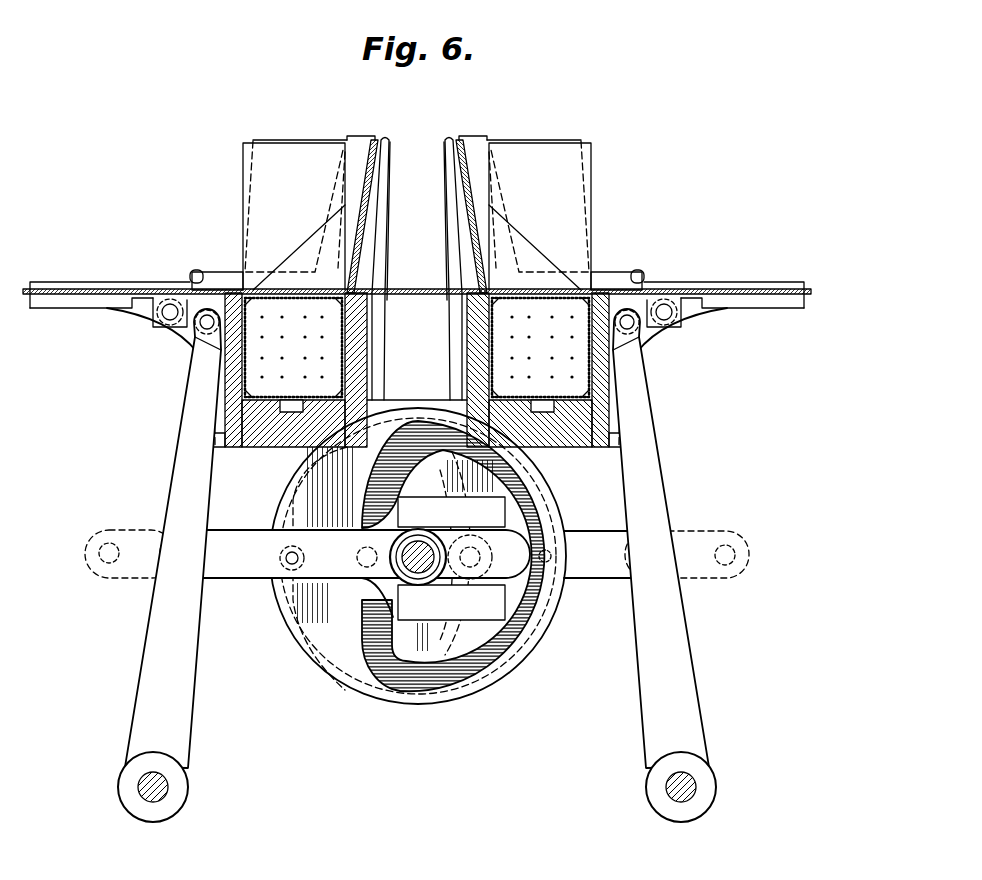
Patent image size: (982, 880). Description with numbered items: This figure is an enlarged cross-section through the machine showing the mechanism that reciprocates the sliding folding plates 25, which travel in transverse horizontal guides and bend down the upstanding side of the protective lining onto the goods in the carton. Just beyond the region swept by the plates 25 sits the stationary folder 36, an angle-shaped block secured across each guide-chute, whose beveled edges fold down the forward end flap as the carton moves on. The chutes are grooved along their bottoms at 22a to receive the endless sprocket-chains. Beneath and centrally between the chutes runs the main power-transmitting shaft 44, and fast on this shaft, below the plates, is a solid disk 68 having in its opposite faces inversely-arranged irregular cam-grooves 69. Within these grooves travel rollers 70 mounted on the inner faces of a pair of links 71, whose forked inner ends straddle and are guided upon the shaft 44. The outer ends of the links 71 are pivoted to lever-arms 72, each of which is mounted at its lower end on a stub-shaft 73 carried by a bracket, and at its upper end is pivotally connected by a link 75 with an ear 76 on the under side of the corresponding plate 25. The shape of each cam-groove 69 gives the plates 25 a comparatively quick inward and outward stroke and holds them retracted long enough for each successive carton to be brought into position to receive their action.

The folding plate 25 is at (123, 290).
The stationary folder 36 is at (236, 272).
The link 75 is at (200, 305).
The ear 76 is at (175, 328).
The groove 22a is at (287, 413).
The solid disk 68 is at (535, 637).
The cam-groove 69 is at (310, 640).
The link 71 is at (417, 554).
The main power-transmitting shaft 44 is at (405, 570).
The roller 70 is at (283, 550).
The lever-arm 72 is at (178, 480).
The stub-shaft 73 is at (172, 787).